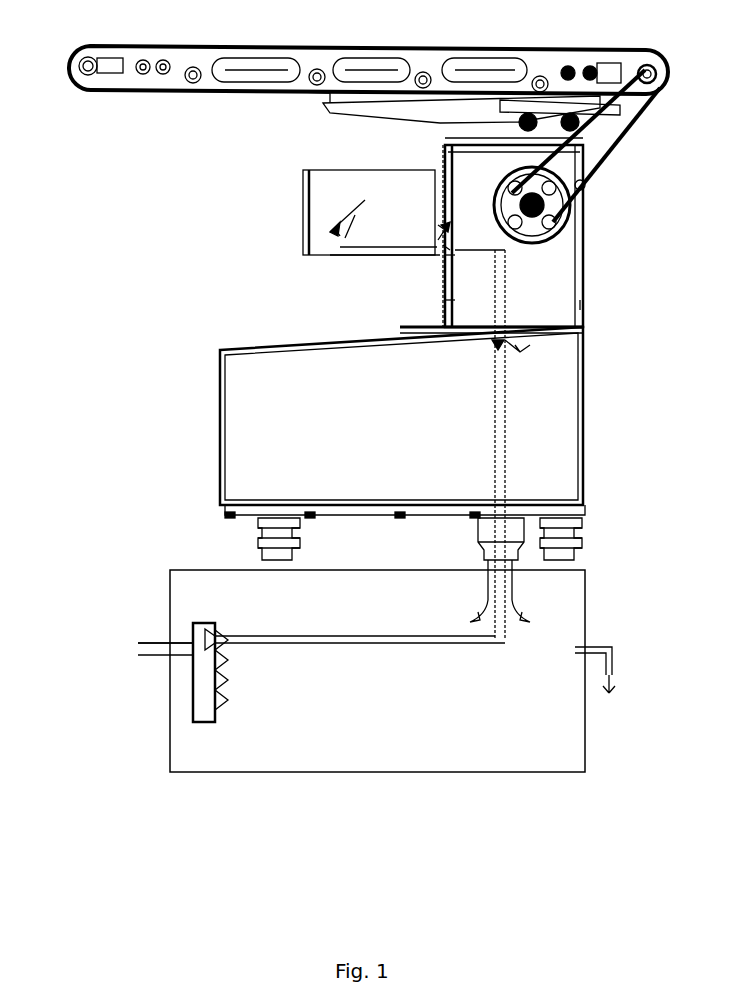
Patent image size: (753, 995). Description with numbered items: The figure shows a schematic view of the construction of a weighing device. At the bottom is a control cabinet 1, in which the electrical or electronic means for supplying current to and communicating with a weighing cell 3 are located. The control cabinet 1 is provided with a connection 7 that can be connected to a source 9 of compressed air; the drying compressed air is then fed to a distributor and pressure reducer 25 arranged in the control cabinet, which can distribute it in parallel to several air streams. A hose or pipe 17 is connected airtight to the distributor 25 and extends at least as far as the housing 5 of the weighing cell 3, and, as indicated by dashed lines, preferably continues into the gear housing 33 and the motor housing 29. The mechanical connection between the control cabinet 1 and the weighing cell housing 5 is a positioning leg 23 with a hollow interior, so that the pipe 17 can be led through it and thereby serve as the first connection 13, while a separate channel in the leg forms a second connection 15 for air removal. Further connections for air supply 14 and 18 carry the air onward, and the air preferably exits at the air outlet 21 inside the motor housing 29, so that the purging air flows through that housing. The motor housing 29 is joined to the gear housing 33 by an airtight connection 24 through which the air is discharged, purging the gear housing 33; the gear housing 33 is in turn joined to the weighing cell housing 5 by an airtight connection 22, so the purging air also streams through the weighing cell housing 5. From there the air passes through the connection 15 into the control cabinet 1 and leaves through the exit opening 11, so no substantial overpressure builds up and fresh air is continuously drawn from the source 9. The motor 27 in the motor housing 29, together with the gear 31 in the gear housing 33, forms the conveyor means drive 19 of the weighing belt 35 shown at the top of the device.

The control cabinet 1 is at (425, 772).
The weighing cell 3 is at (255, 407).
The housing of the weighing cell 5 is at (220, 445).
The gas pressure connection of the control cabinet 7 is at (183, 658).
The source with gas overpressure 9 is at (118, 648).
The outlet opening 11 is at (578, 655).
The first connection (gas supply) 13 is at (478, 565).
The connection for air supply 14 is at (492, 338).
The second connection (gas removal) 15 is at (522, 565).
The gas pressure hose or pipe 17 is at (380, 643).
The connection for air supply 18 is at (445, 258).
The conveyor means drive 19 is at (305, 152).
The air outlet 21 is at (343, 258).
The connection between the housing of the weighing cell and the gear housing (air re 22 is at (530, 345).
The positioning leg 23 is at (478, 545).
The connection between the motor housing and the gear housing (air removal) 24 is at (437, 258).
The distributor and pressure reducer 25 is at (210, 722).
The motor 27 is at (308, 230).
The motor housing 29 is at (303, 208).
The gear 31 is at (585, 185).
The gear housing 33 is at (588, 215).
The conveyor belt or weighing belt 35 is at (520, 48).